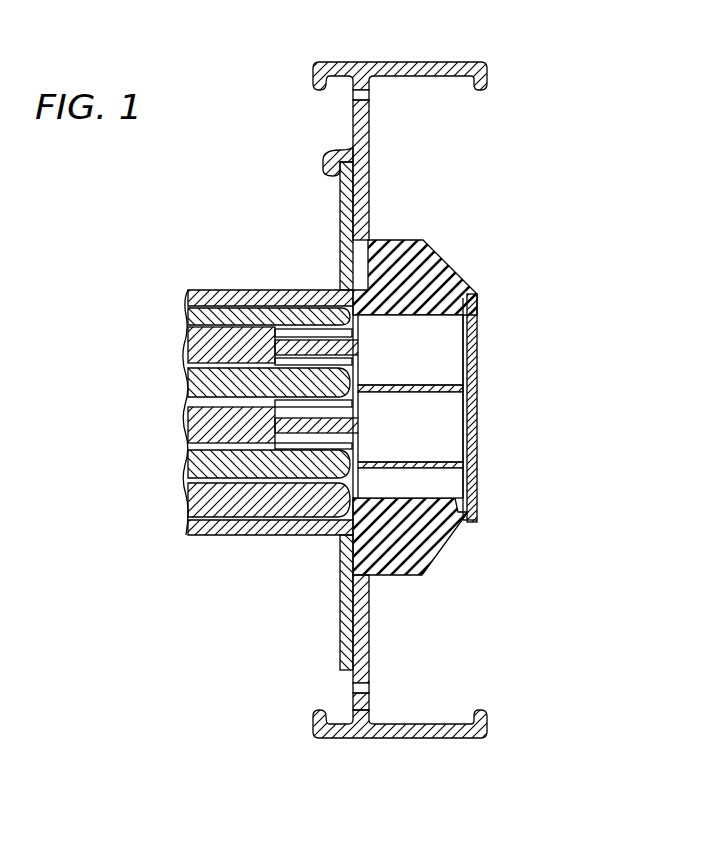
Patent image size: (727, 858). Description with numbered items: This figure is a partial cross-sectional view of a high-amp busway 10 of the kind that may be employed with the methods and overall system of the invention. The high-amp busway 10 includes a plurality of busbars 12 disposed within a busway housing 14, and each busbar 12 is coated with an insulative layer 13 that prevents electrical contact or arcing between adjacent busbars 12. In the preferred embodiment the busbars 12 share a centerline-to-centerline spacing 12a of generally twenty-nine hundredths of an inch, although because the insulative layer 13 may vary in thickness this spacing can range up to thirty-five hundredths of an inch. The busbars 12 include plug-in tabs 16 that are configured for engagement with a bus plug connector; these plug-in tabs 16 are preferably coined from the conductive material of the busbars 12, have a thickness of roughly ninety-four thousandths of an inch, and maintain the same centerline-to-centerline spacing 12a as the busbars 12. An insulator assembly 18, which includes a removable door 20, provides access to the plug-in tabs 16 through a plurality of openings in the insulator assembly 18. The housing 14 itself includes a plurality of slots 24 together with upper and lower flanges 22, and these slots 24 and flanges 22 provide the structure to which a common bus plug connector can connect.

The high-amp busway 10 is at (540, 30).
The busbar 12 is at (200, 335).
The centerline-to-centerline spacing 12a is at (152, 348).
The insulative layer 13 is at (208, 390).
The busway housing 14 is at (340, 232).
The plug-in tab 16 is at (406, 349).
The insulator assembly 18 is at (400, 240).
The removable door 20 is at (478, 466).
The upper and lower flanges 22 is at (346, 62).
The slot 24 is at (369, 94).